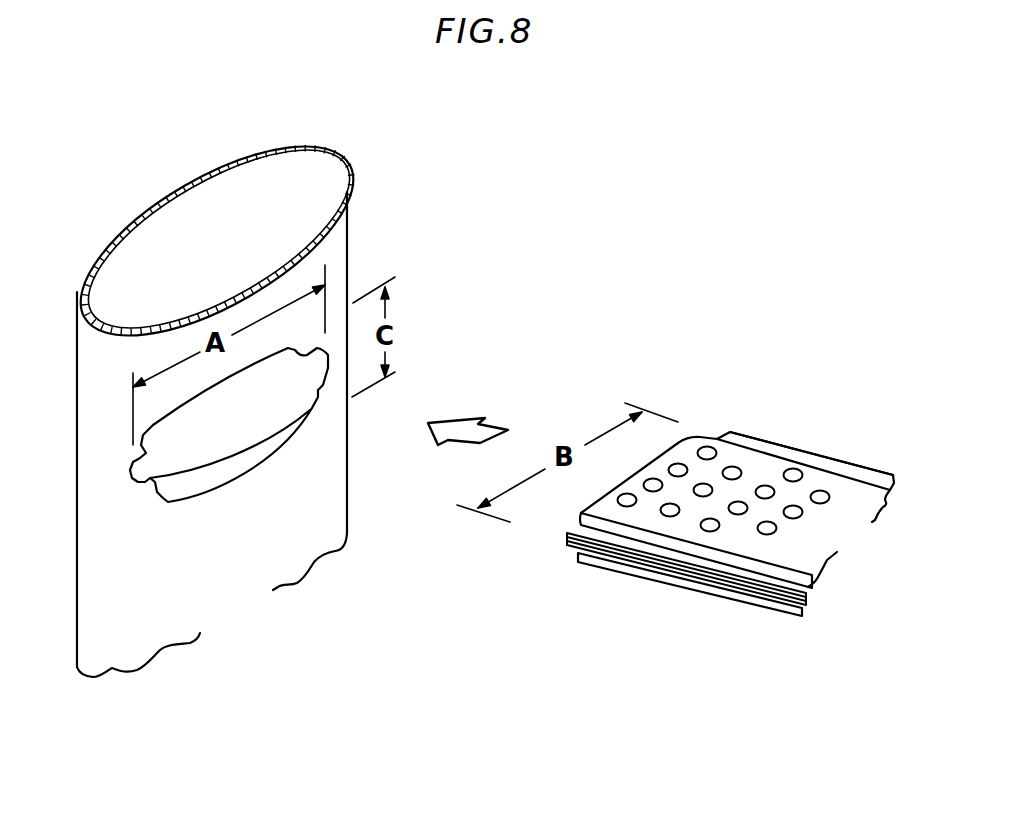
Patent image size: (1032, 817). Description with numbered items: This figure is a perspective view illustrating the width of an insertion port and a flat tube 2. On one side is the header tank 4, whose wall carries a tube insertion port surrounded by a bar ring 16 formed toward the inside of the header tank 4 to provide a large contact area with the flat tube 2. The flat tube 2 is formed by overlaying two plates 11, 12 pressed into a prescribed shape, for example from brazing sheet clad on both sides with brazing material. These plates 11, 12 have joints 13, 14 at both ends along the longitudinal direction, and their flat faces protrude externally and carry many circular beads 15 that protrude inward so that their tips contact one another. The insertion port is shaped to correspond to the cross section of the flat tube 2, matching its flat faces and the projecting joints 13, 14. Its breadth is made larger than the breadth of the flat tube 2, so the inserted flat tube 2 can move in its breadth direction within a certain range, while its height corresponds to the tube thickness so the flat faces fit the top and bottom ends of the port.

The flat tube 2 is at (824, 444).
The header tank 4 is at (103, 427).
The plate 11 is at (700, 547).
The plate 12 is at (721, 599).
The joint 13 is at (566, 535).
The joint 14 is at (740, 440).
The circular bead 15 is at (680, 463).
The bar ring 16 is at (238, 463).